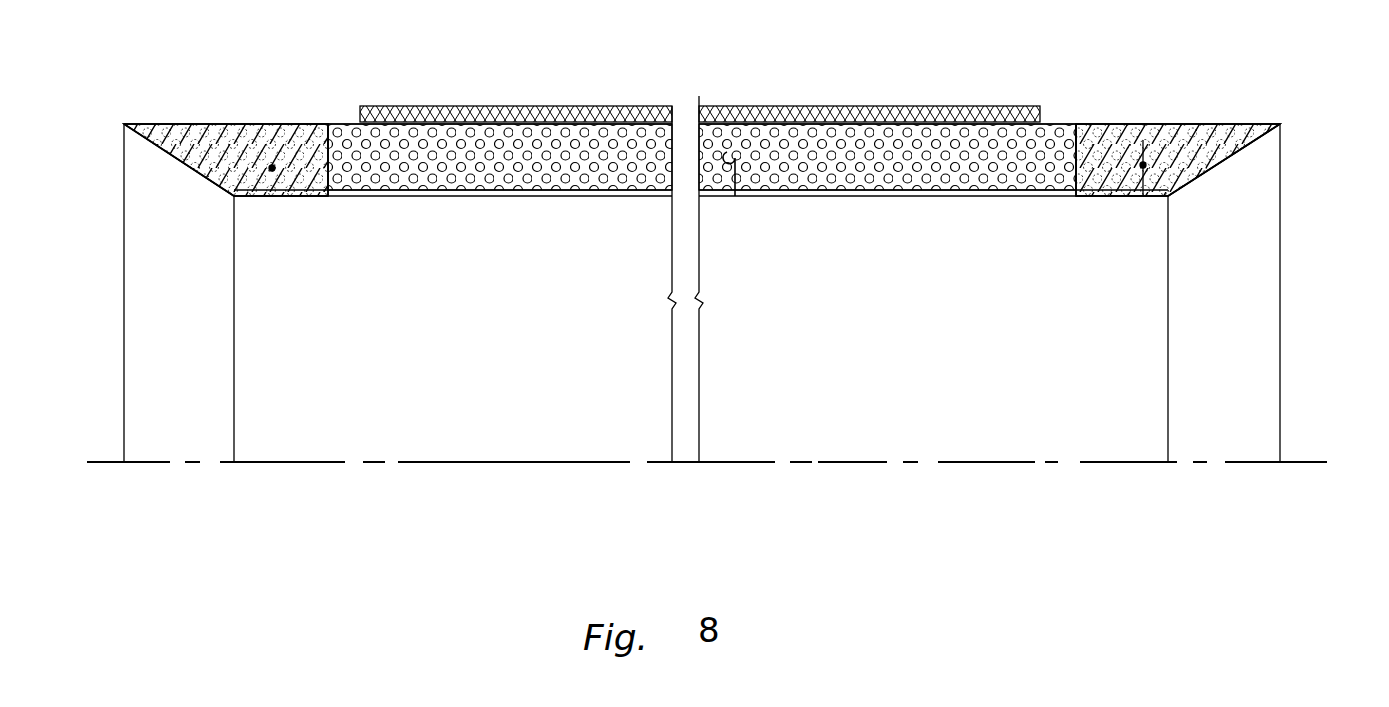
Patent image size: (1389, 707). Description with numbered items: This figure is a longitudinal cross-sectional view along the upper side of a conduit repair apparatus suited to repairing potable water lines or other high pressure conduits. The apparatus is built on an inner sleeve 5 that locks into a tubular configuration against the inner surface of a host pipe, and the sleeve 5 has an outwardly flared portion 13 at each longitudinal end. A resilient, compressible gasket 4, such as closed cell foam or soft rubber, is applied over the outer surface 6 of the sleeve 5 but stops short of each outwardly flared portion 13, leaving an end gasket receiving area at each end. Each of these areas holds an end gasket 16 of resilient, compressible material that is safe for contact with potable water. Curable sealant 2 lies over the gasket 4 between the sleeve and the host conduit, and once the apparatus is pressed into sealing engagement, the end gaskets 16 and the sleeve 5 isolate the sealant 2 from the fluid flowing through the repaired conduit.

The curable sealant 2 is at (775, 104).
The resilient, compressible gasket 4 is at (773, 165).
The inner sleeve 5 is at (318, 433).
The outer surface 6 is at (520, 190).
The outwardly flared portion 13 is at (146, 278).
The end gasket 16 is at (272, 168).